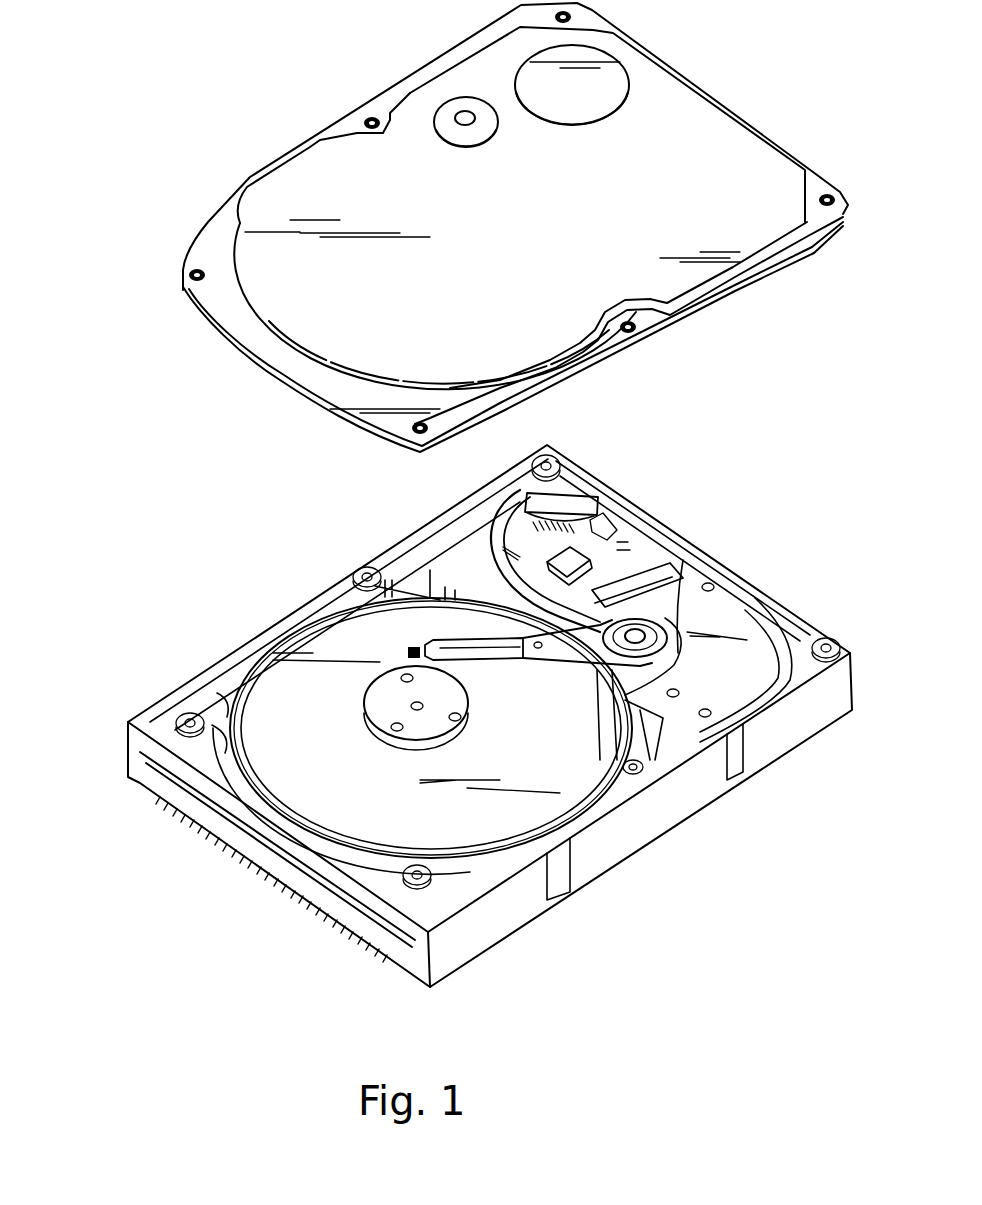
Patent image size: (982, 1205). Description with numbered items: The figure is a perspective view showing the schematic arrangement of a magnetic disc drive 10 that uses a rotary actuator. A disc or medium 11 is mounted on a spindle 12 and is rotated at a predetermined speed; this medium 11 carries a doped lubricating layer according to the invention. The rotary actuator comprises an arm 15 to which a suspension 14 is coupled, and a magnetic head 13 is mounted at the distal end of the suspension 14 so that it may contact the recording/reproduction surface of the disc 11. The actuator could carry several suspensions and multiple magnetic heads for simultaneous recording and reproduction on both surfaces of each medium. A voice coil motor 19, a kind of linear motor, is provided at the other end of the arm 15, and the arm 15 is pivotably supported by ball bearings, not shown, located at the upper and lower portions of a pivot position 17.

The magnetic disc drive 10 is at (108, 925).
The disc or medium 11 is at (265, 693).
The spindle 12 is at (380, 722).
The magnetic head 13 is at (411, 650).
The suspension 14 is at (499, 666).
The arm 15 is at (548, 666).
The pivot position 17 is at (662, 612).
The voice coil motor 19 is at (747, 612).